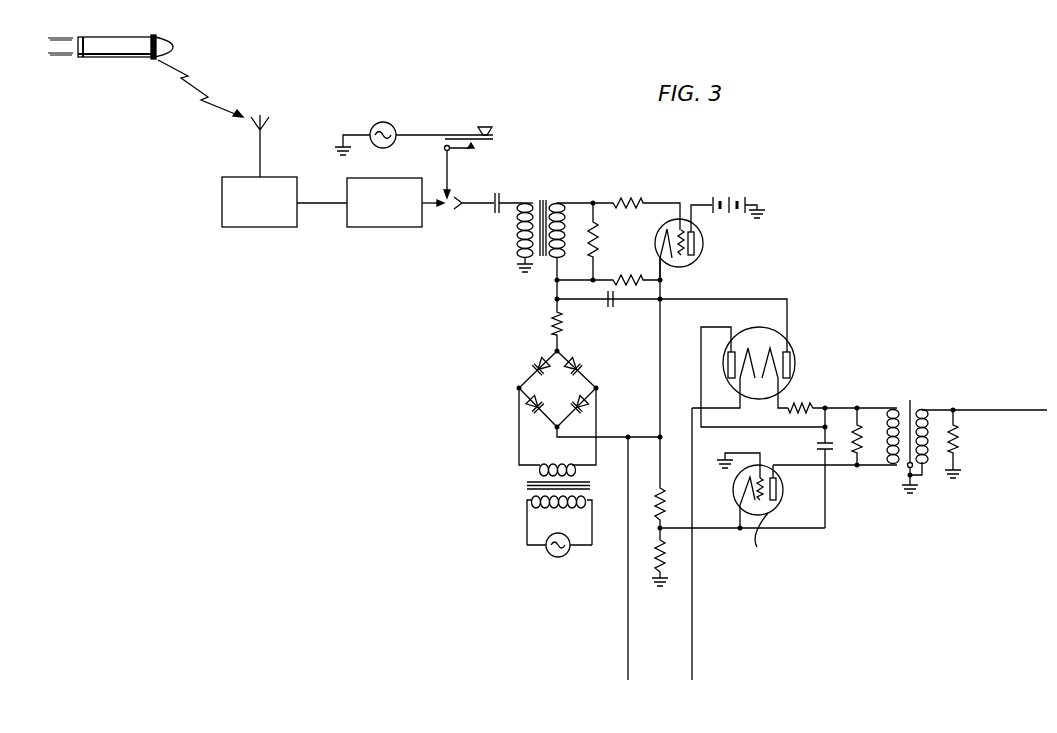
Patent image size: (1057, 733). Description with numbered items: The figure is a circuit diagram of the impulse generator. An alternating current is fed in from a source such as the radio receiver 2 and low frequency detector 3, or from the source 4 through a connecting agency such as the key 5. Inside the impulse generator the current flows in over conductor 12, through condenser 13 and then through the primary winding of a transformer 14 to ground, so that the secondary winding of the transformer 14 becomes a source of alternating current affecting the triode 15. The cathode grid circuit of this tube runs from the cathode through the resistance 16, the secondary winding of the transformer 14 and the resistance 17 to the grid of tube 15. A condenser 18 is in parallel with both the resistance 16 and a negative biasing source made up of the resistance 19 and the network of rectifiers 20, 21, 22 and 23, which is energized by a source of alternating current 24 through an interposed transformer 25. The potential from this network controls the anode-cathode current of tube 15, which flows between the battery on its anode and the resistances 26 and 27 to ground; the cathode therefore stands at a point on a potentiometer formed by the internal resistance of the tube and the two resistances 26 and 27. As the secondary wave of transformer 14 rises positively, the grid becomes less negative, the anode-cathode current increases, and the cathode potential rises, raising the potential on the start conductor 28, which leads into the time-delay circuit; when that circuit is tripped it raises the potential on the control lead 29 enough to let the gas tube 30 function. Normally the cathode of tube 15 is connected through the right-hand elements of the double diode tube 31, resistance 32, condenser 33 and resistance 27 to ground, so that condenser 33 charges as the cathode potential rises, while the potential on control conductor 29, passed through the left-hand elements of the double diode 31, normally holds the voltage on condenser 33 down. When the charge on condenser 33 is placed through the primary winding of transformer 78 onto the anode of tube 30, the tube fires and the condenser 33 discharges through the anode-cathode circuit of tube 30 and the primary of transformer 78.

The radio receiver 2 is at (222, 202).
The low frequency detector 3 is at (363, 227).
The source 4 is at (380, 122).
The key 5 is at (490, 140).
The conductor 12 is at (473, 206).
The condenser 13 is at (502, 194).
The transformer 14 is at (544, 197).
The triode 15 is at (703, 248).
The resistance 16 is at (625, 270).
The resistance 17 is at (628, 196).
The condenser 18 is at (610, 309).
The resistance 19 is at (548, 323).
The rectifier 20 is at (528, 370).
The rectifier 21 is at (588, 370).
The rectifier 22 is at (585, 412).
The rectifier 23 is at (535, 412).
The source of alternating current 24 is at (552, 556).
The transformer 25 is at (520, 486).
The resistance 26 is at (652, 502).
The resistance 27 is at (652, 555).
The start conductor 28 is at (627, 652).
The control lead 29 is at (693, 652).
The gas tube 30 is at (785, 497).
The double diode tube 31 is at (798, 366).
The resistance 32 is at (802, 398).
The condenser 33 is at (815, 445).
The transformer 78 is at (912, 403).